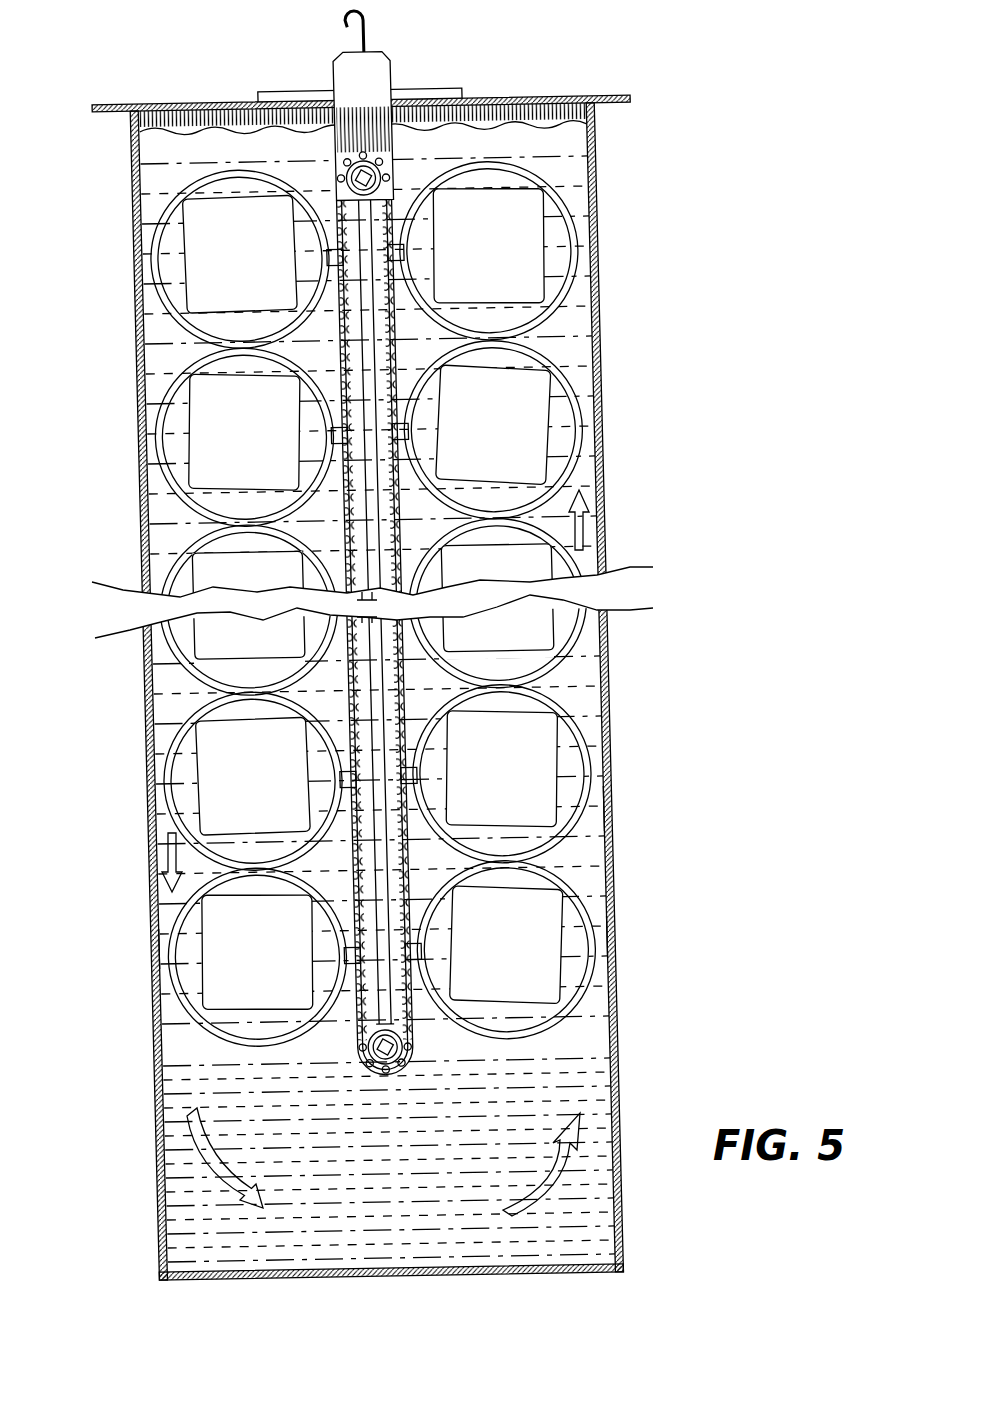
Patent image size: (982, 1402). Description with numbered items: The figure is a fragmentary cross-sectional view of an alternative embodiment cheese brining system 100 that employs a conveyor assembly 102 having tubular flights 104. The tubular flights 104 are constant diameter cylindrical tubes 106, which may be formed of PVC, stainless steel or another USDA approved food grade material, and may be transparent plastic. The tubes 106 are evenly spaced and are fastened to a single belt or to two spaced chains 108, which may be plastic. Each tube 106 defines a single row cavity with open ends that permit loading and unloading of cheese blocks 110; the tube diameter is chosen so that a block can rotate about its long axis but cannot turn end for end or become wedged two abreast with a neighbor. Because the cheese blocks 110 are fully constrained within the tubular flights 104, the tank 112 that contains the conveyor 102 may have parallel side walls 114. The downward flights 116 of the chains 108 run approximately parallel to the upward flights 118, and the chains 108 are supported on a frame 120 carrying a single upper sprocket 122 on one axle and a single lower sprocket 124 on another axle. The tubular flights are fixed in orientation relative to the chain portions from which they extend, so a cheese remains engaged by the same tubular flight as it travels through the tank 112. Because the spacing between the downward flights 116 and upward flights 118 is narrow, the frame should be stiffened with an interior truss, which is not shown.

The cheese brining system 100 is at (604, 63).
The conveyor assembly 102 is at (443, 88).
The tubular flights 104 is at (598, 262).
The cylindrical tubes 106 is at (548, 313).
The chains 108 is at (393, 197).
The cheese blocks 110 is at (587, 474).
The tank 112 is at (612, 818).
The parallel side walls 114 is at (150, 950).
The downward flights 116 is at (353, 1028).
The upward flights 118 is at (427, 1037).
The frame 120 is at (372, 388).
The upper sprocket 122 is at (330, 208).
The lower sprocket 124 is at (385, 1065).